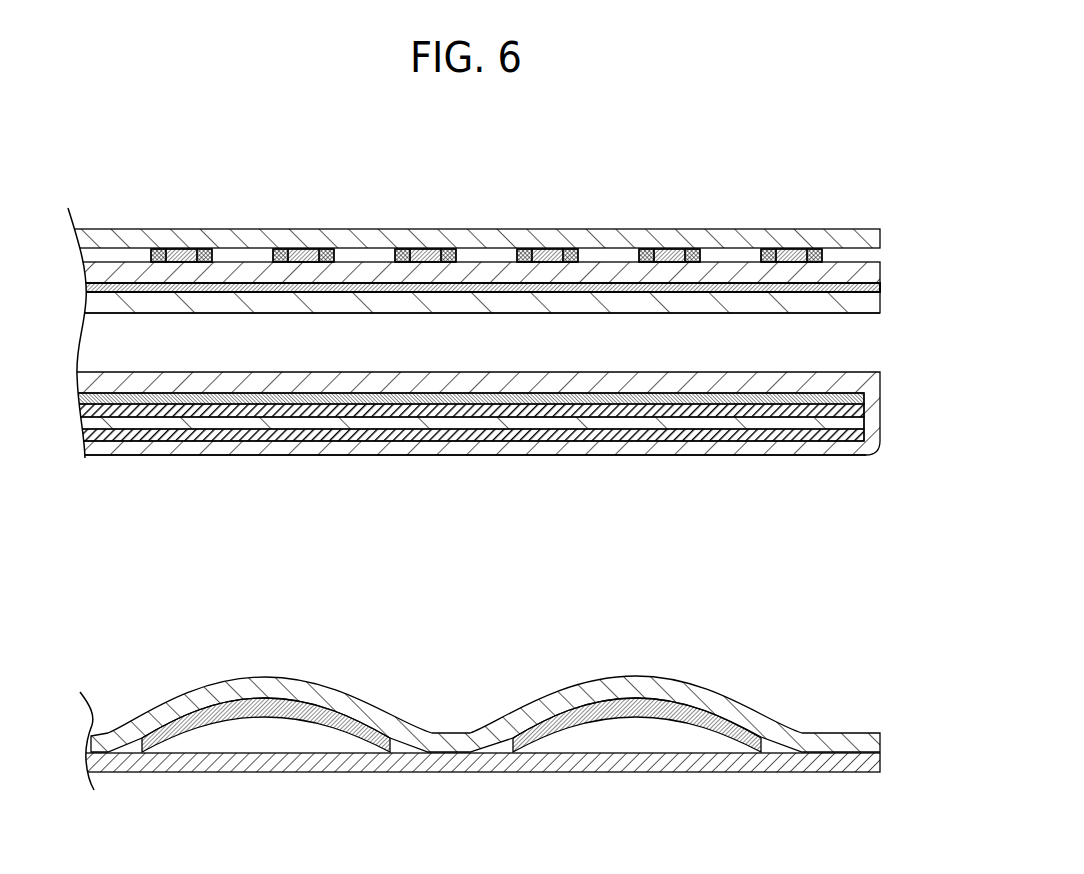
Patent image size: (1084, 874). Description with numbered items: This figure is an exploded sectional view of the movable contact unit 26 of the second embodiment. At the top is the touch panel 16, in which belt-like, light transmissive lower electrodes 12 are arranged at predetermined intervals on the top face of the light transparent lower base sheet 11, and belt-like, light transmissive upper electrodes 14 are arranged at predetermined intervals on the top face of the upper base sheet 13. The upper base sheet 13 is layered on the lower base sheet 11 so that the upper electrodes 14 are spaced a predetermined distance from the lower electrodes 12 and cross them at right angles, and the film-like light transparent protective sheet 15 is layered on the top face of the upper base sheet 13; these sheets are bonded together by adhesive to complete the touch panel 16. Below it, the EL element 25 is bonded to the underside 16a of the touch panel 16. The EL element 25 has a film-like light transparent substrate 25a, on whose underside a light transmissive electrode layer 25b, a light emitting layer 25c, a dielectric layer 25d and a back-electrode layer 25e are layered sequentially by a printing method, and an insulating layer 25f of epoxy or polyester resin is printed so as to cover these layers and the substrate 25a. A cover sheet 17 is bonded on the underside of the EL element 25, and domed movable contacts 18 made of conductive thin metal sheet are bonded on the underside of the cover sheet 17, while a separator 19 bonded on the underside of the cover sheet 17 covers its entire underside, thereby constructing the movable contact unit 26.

The lower base sheet 11 is at (493, 303).
The lower electrodes 12 is at (380, 285).
The upper base sheet 13 is at (260, 276).
The upper electrodes 14 is at (180, 249).
The protective sheet 15 is at (590, 240).
The touch panel 16 is at (504, 256).
The underside of touch panel 16a is at (803, 313).
The cover sheet 17 is at (443, 745).
The domed movable contact 18 is at (638, 705).
The separator 19 is at (623, 767).
The EL element 25 is at (504, 445).
The substrate 25a is at (167, 380).
The light transmissive electrode layer 25b is at (258, 400).
The light emitting layer 25c is at (343, 410).
The dielectric layer 25d is at (497, 424).
The back-electrode layer 25e is at (596, 435).
The insulating layer 25f is at (692, 447).
The movable contact unit 26 is at (504, 328).